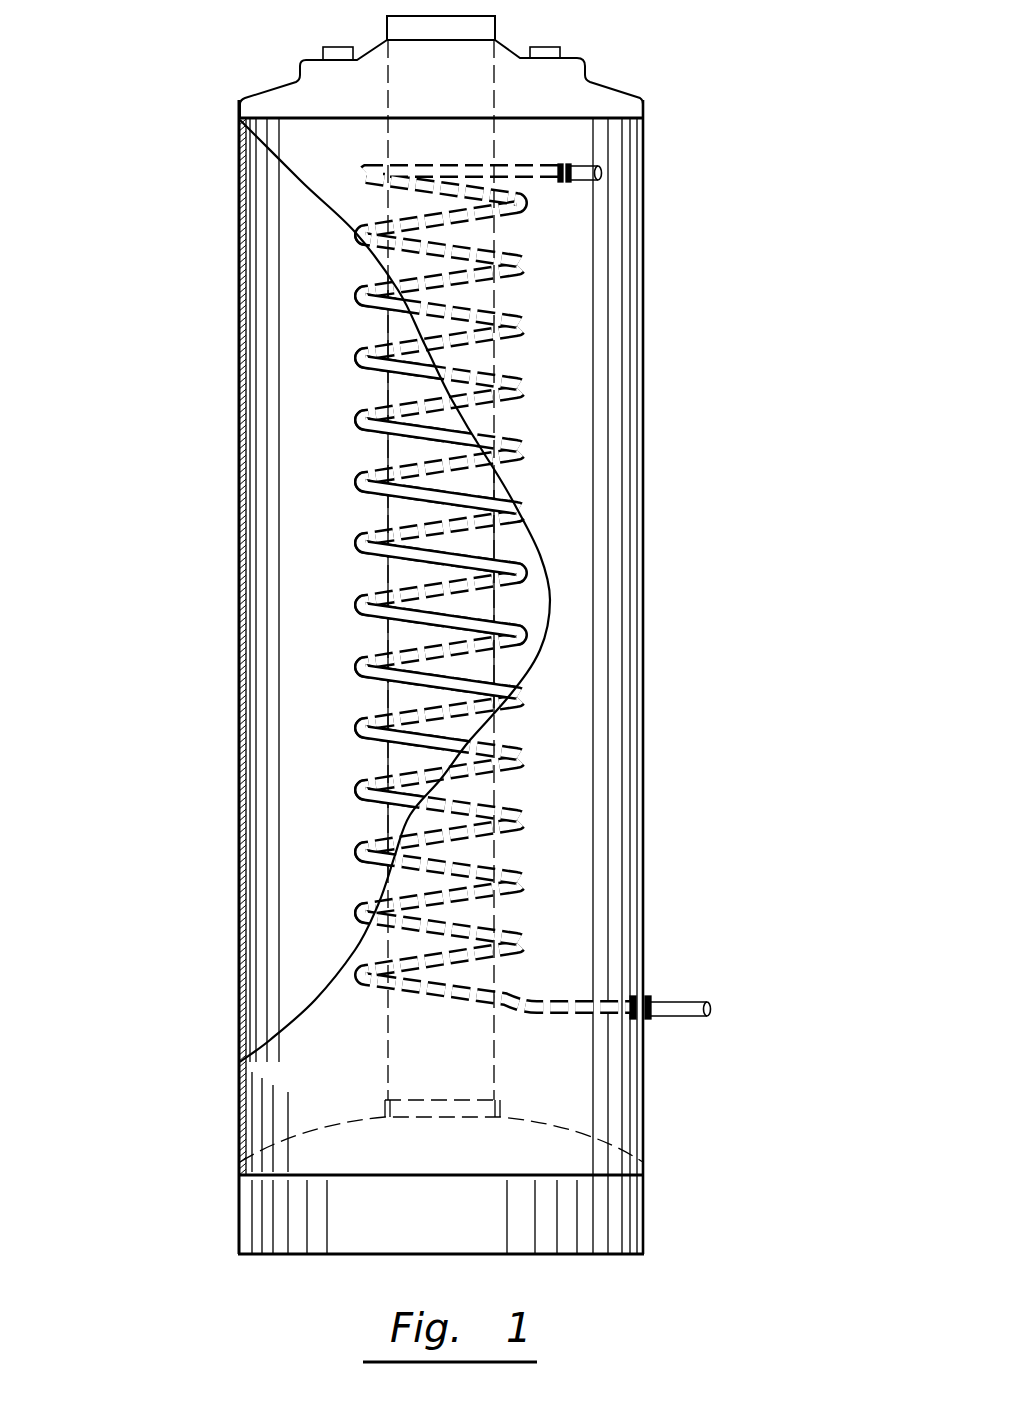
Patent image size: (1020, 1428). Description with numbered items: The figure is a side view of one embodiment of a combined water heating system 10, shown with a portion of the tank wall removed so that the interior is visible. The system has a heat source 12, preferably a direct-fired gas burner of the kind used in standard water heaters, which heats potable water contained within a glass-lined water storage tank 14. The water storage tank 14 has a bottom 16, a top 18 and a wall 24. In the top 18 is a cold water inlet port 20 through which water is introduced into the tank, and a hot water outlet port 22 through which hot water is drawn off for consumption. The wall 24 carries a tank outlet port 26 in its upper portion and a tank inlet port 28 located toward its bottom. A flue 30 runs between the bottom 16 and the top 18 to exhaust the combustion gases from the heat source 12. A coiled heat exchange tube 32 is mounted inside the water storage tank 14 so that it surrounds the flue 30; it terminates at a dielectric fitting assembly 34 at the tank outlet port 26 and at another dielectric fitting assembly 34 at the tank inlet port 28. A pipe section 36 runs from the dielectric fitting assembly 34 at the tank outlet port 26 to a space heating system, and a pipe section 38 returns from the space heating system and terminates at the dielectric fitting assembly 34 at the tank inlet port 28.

The combined water heating system 10 is at (441, 627).
The heat source 12 is at (238, 1205).
The water storage tank 14 is at (649, 539).
The bottom 16 is at (273, 1137).
The top 18 is at (258, 92).
The cold water inlet port 20 is at (560, 50).
The hot water outlet port 22 is at (322, 48).
The wall 24 is at (382, 570).
The tank outlet port 26 is at (663, 556).
The tank inlet port 28 is at (740, 1025).
The flue 30 is at (385, 693).
The coiled heat exchange tube 32 is at (412, 787).
The dielectric fitting assembly 34 is at (614, 162).
The pipe section 36 is at (604, 175).
The pipe section 38 is at (722, 1005).